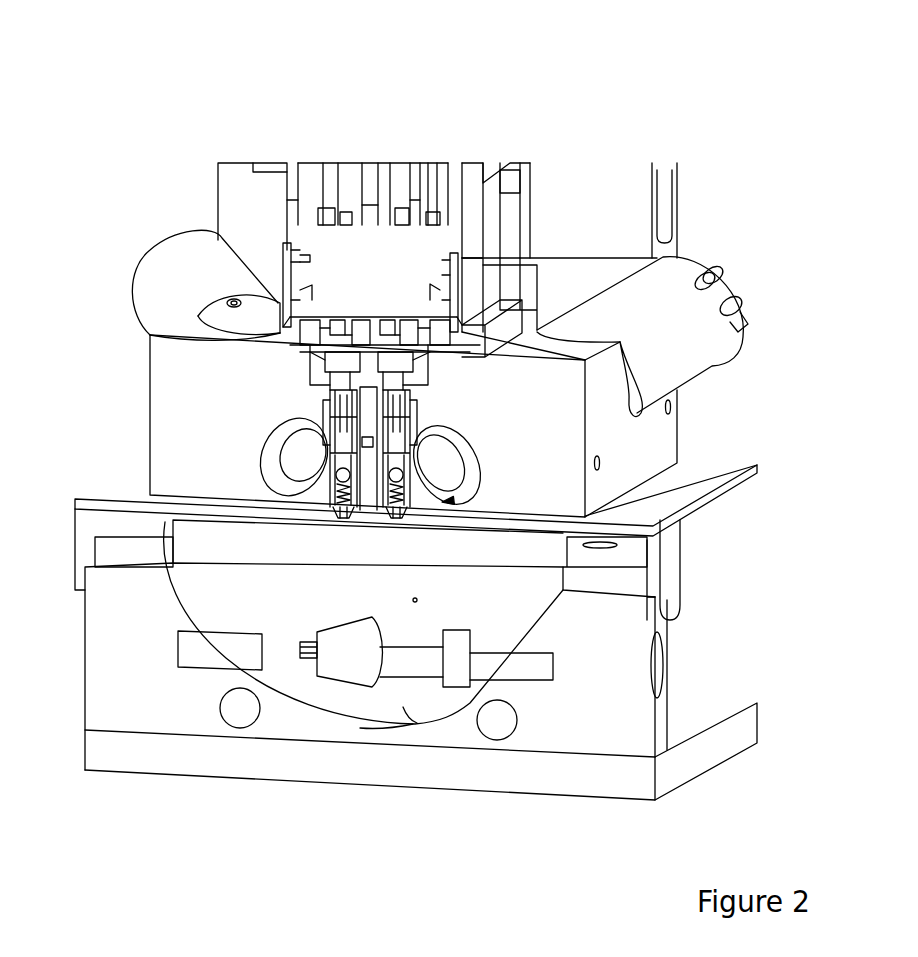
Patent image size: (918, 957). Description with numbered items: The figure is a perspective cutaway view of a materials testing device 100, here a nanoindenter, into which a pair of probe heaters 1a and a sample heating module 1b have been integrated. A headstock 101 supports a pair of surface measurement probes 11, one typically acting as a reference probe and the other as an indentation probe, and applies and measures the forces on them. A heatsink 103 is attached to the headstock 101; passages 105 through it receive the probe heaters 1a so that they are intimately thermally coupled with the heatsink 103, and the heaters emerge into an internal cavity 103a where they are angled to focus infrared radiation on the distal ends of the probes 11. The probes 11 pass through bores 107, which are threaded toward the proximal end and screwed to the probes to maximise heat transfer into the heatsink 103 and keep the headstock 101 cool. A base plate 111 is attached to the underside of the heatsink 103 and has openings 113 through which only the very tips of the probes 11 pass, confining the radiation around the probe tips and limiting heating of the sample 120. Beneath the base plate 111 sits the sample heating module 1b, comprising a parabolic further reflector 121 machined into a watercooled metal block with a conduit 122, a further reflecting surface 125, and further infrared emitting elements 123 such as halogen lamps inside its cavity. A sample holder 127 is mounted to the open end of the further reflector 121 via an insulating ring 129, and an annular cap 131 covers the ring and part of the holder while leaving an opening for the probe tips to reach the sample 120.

The materials testing device 100 is at (510, 112).
The headstock 101 is at (222, 128).
The probe heater 1a is at (136, 230).
The sample heating module 1b is at (53, 508).
The heatsink 103 is at (173, 392).
The internal cavity 103a is at (455, 500).
The passages 105 is at (265, 462).
The bores 107 is at (327, 418).
The openings 113 is at (333, 510).
The surface measurement probes 11 is at (342, 508).
The base plate 111 is at (690, 490).
The sample 120 is at (287, 517).
The sample holder 127 is at (222, 537).
The insulating ring 129 is at (607, 580).
The annular cap 131 is at (670, 580).
The further reflector 121 is at (141, 685).
The conduit 122 is at (667, 667).
The further infrared emitting elements 123 is at (358, 665).
The further reflecting surface 125 is at (407, 707).